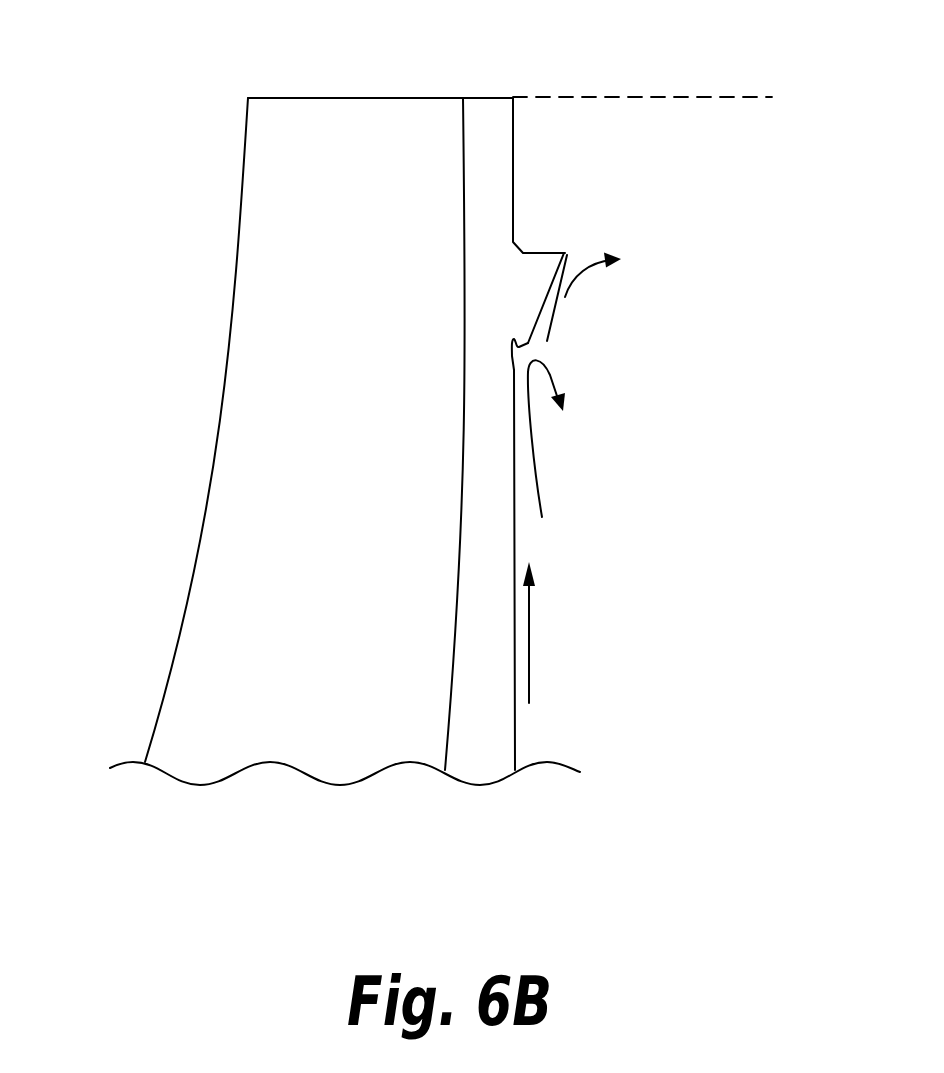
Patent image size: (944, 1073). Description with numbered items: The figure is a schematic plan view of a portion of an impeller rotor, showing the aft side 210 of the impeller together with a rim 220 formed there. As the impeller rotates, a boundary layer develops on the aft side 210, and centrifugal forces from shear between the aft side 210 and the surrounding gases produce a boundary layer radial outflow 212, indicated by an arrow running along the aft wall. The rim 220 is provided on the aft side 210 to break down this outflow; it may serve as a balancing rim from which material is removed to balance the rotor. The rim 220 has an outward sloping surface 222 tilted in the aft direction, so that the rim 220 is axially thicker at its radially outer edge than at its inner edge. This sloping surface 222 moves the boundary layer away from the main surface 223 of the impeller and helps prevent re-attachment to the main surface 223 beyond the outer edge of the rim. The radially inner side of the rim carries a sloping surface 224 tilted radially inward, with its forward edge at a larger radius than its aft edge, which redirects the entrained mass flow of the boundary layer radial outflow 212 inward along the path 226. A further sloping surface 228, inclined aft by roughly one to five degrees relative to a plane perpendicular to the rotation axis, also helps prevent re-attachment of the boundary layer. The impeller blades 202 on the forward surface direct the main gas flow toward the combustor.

The impeller blades 202 is at (245, 605).
The aft side 210 is at (517, 727).
The boundary layer radial outflow 212 is at (530, 610).
The rim 220 is at (550, 252).
The outward sloping surface 222 is at (550, 303).
The main surface 223 is at (513, 193).
The sloping surface 224 is at (510, 355).
The path 226 is at (553, 379).
The sloping surface 228 is at (513, 133).